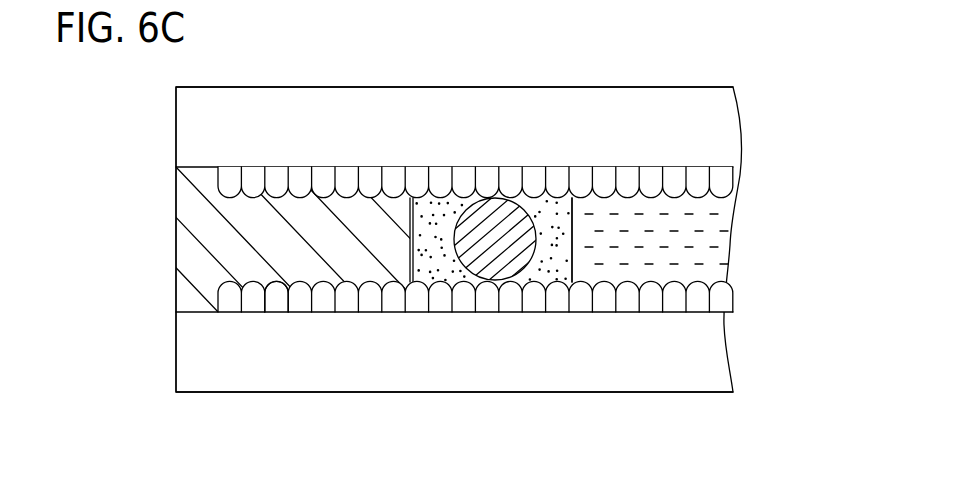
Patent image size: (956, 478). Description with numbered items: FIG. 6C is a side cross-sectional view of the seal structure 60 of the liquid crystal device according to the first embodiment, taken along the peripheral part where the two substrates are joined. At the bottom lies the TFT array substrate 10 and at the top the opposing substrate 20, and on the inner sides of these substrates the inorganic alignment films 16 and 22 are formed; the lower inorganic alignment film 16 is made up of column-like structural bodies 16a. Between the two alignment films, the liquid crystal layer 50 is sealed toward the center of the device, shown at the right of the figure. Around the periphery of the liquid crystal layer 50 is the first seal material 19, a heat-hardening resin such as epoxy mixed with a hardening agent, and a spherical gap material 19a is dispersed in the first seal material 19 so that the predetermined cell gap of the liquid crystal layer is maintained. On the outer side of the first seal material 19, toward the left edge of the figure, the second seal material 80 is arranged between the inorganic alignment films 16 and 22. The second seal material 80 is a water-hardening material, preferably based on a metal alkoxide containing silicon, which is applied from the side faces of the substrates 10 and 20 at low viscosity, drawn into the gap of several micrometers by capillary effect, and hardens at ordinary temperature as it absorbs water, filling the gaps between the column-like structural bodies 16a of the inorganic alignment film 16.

The display device 60 is at (131, 169).
The opposing substrate 20 is at (733, 125).
The inorganic alignment film 22 is at (742, 180).
The second seal material 80 is at (176, 239).
The spherical gap material 19a is at (487, 207).
The first seal material 19 is at (553, 207).
The liquid crystal layer 50 is at (732, 238).
The inorganic alignment film 16 is at (733, 295).
The column-like structural body 16a is at (281, 305).
The TFT array substrate 10 is at (724, 350).